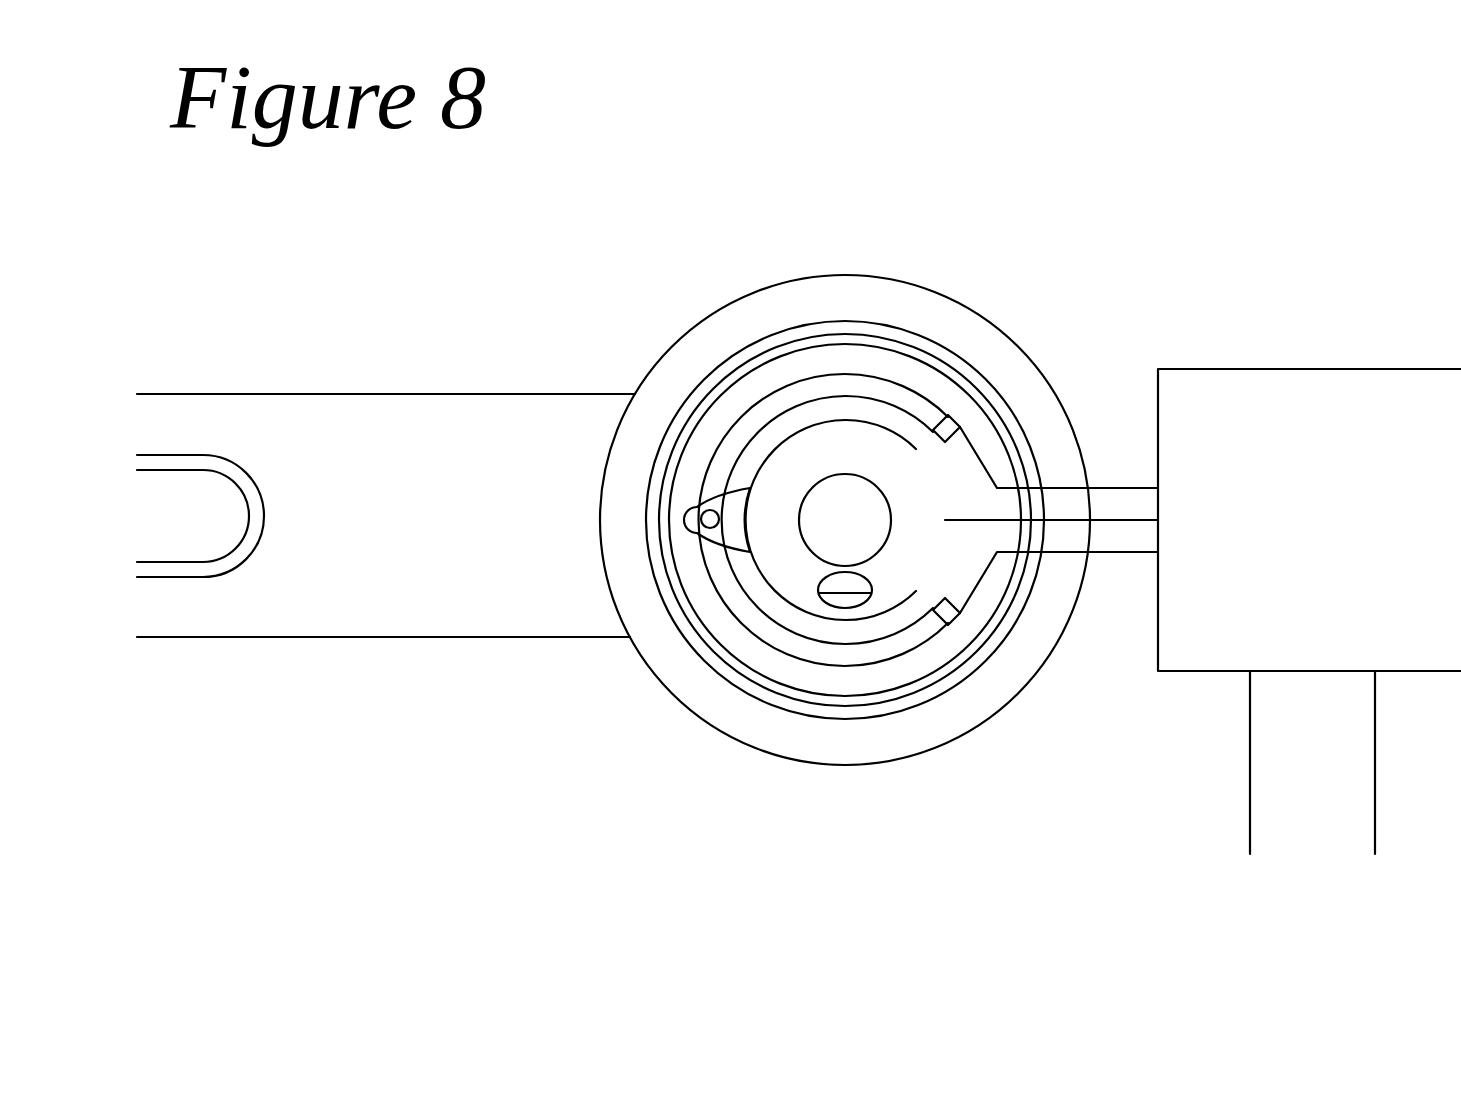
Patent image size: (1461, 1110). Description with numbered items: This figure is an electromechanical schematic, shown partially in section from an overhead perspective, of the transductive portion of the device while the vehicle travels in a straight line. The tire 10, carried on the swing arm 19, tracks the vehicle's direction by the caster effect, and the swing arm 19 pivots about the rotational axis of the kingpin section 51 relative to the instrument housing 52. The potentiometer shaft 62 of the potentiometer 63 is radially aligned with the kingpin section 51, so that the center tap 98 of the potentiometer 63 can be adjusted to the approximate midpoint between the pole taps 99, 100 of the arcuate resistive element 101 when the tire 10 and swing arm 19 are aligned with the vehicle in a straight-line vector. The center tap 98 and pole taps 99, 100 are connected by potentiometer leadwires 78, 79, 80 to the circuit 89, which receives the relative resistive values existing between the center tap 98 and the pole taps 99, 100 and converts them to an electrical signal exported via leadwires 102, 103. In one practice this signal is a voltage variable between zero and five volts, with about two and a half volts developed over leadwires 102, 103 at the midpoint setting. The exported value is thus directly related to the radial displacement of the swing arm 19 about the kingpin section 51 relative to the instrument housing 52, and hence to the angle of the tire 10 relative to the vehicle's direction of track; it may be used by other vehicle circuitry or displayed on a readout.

The tire 10 is at (182, 498).
The swing arm 19 is at (362, 587).
The kingpin section 51 is at (840, 587).
The instrument housing 52 is at (838, 748).
The potentiometer shaft 62 is at (872, 497).
The potentiometer 63 is at (942, 675).
The potentiometer leadwire 78 is at (1118, 488).
The potentiometer leadwire 79 is at (1132, 520).
The potentiometer leadwire 80 is at (1120, 552).
The circuit 89 is at (1333, 432).
The center tap 98 is at (697, 507).
The pole tap 99 is at (960, 597).
The pole tap 100 is at (958, 440).
The arcuate resistive element 101 is at (845, 378).
The leadwire 102 is at (1207, 762).
The leadwire 103 is at (1415, 762).